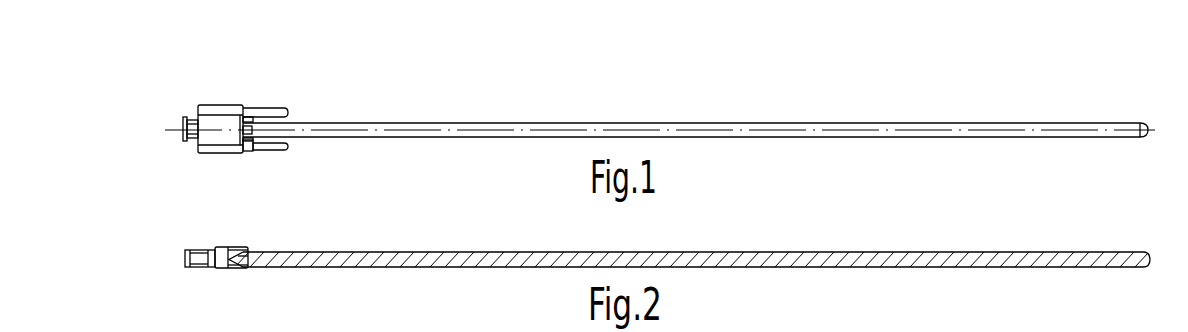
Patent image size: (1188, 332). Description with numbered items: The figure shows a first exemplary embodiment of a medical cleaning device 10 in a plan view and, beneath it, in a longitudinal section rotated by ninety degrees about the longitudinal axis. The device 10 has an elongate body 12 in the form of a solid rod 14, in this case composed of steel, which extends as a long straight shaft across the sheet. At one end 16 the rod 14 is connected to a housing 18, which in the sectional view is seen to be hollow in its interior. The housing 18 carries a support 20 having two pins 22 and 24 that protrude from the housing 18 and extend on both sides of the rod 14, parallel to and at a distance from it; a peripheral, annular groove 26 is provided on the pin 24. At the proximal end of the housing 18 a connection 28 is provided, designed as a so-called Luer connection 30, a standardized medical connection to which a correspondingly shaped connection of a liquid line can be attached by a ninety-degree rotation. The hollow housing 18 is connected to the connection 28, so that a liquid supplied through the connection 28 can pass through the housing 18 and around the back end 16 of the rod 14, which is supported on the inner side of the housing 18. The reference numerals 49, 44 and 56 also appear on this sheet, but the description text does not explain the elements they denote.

In FIG. 1, the medical cleaning device 10 is at (1043, 108).
In FIG. 2, the medical cleaning device 10 is at (1058, 241).
In FIG. 1, the elongate body 12 is at (778, 130).
In FIG. 2, the solid rod 14 is at (765, 262).
In FIG. 2, the end 16 is at (251, 268).
In FIG. 1, the housing 18 is at (212, 111).
In FIG. 1, the support 20 is at (272, 100).
In FIG. 1, the pin 22 is at (277, 112).
In FIG. 1, the pin 24 is at (277, 150).
In FIG. 1, the annular groove 26 is at (254, 152).
In FIG. 1, the connection 28 is at (182, 133).
In FIG. 2, the connection 28 is at (185, 252).
In FIG. 1, the Luer connection 30 is at (190, 121).
In FIG. 2, the rod tip 49 is at (245, 256).
In FIG. 2, the element 44 is at (945, 331).
In FIG. 2, the element 56 is at (1066, 325).